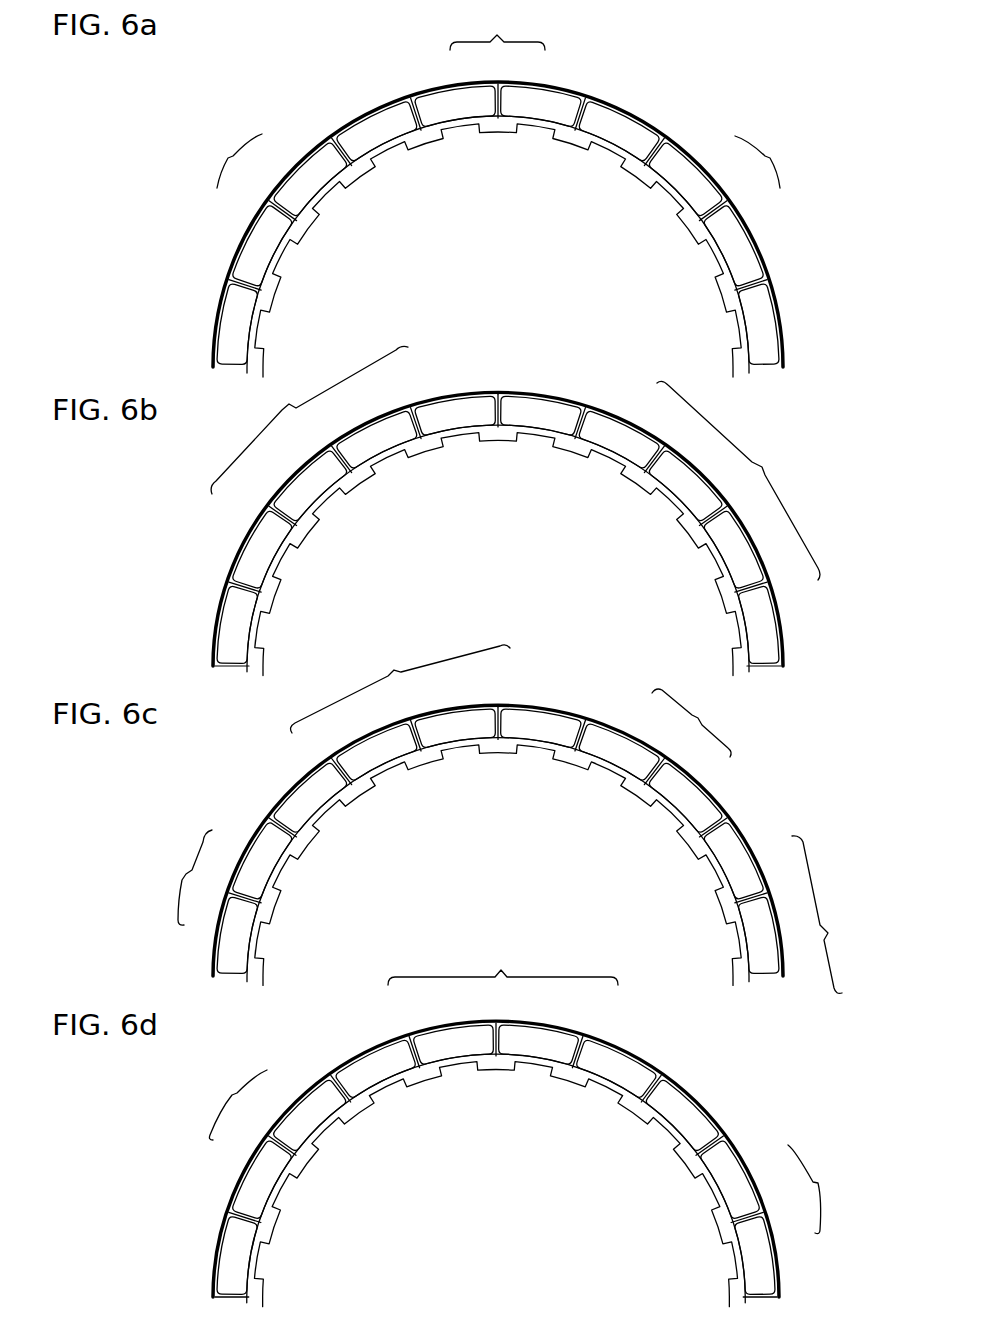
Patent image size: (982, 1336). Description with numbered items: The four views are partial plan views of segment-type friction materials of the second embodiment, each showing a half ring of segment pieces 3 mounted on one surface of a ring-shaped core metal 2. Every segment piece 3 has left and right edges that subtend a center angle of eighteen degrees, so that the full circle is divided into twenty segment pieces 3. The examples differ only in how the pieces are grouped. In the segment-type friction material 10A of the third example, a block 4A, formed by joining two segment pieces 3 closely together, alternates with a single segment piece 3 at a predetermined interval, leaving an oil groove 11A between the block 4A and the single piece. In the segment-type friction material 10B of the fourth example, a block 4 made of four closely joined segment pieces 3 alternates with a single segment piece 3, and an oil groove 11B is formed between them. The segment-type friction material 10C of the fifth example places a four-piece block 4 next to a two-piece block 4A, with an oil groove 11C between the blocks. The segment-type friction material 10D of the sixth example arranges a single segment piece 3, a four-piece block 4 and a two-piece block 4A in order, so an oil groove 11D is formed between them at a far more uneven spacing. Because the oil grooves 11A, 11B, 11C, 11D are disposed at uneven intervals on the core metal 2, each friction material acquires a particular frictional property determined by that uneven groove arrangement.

In FIG. 6a, the core metal 2 is at (431, 140).
In FIG. 6b, the core metal 2 is at (430, 442).
In FIG. 6c, the core metal 2 is at (430, 752).
In FIG. 6d, the core metal 2 is at (430, 1070).
In FIG. 6a, the segment piece 3 is at (456, 97).
In FIG. 6b, the segment piece 3 is at (438, 397).
In FIG. 6c, the segment piece 3 is at (322, 782).
In FIG. 6d, the segment piece 3 is at (398, 1042).
In FIG. 6b, the block 4 is at (515, 463).
In FIG. 6c, the block 4 is at (572, 818).
In FIG. 6d, the block 4 is at (503, 963).
In FIG. 6a, the block 4A is at (501, 98).
In FIG. 6c, the block 4A is at (443, 804).
In FIG. 6d, the block 4A is at (525, 1151).
In FIG. 6a, the segment-type friction material 10A is at (246, 90).
In FIG. 6b, the segment-type friction material 10B is at (195, 491).
In FIG. 6c, the segment-type friction material 10C is at (208, 793).
In FIG. 6d, the segment-type friction material 10D is at (181, 1118).
In FIG. 6a, the oil groove 11A is at (418, 115).
In FIG. 6b, the oil groove 11B is at (495, 392).
In FIG. 6c, the oil groove 11C is at (275, 810).
In FIG. 6d, the oil groove 11D is at (340, 1072).